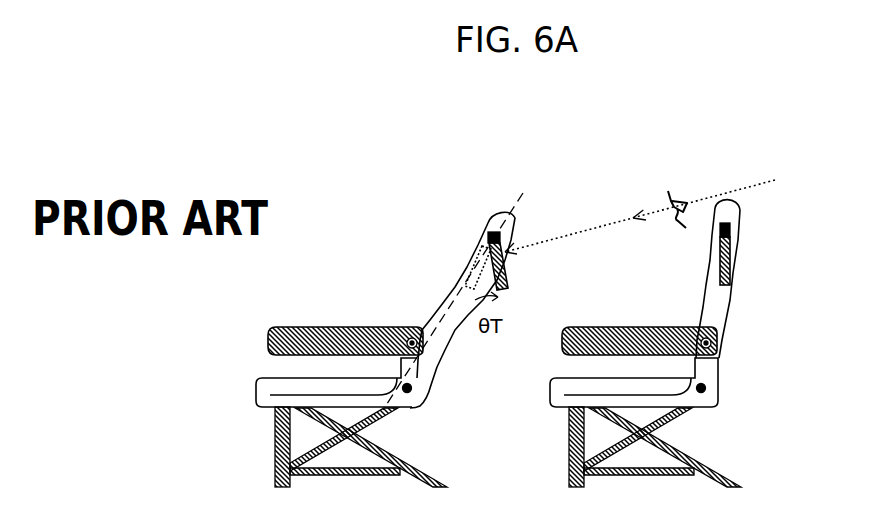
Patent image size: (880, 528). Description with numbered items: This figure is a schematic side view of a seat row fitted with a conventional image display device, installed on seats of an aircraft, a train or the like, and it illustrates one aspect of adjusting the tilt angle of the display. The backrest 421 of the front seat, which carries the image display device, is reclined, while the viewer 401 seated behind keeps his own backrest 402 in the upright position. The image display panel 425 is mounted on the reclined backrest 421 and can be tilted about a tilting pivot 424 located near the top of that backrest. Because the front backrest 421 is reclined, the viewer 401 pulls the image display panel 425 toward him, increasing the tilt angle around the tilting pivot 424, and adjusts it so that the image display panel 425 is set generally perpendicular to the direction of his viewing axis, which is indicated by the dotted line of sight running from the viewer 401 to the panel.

The viewer 401 is at (687, 188).
The backrest 402 is at (713, 262).
The backrest 421 is at (488, 237).
The tilting pivot 424 is at (493, 232).
The image display panel 425 is at (510, 282).